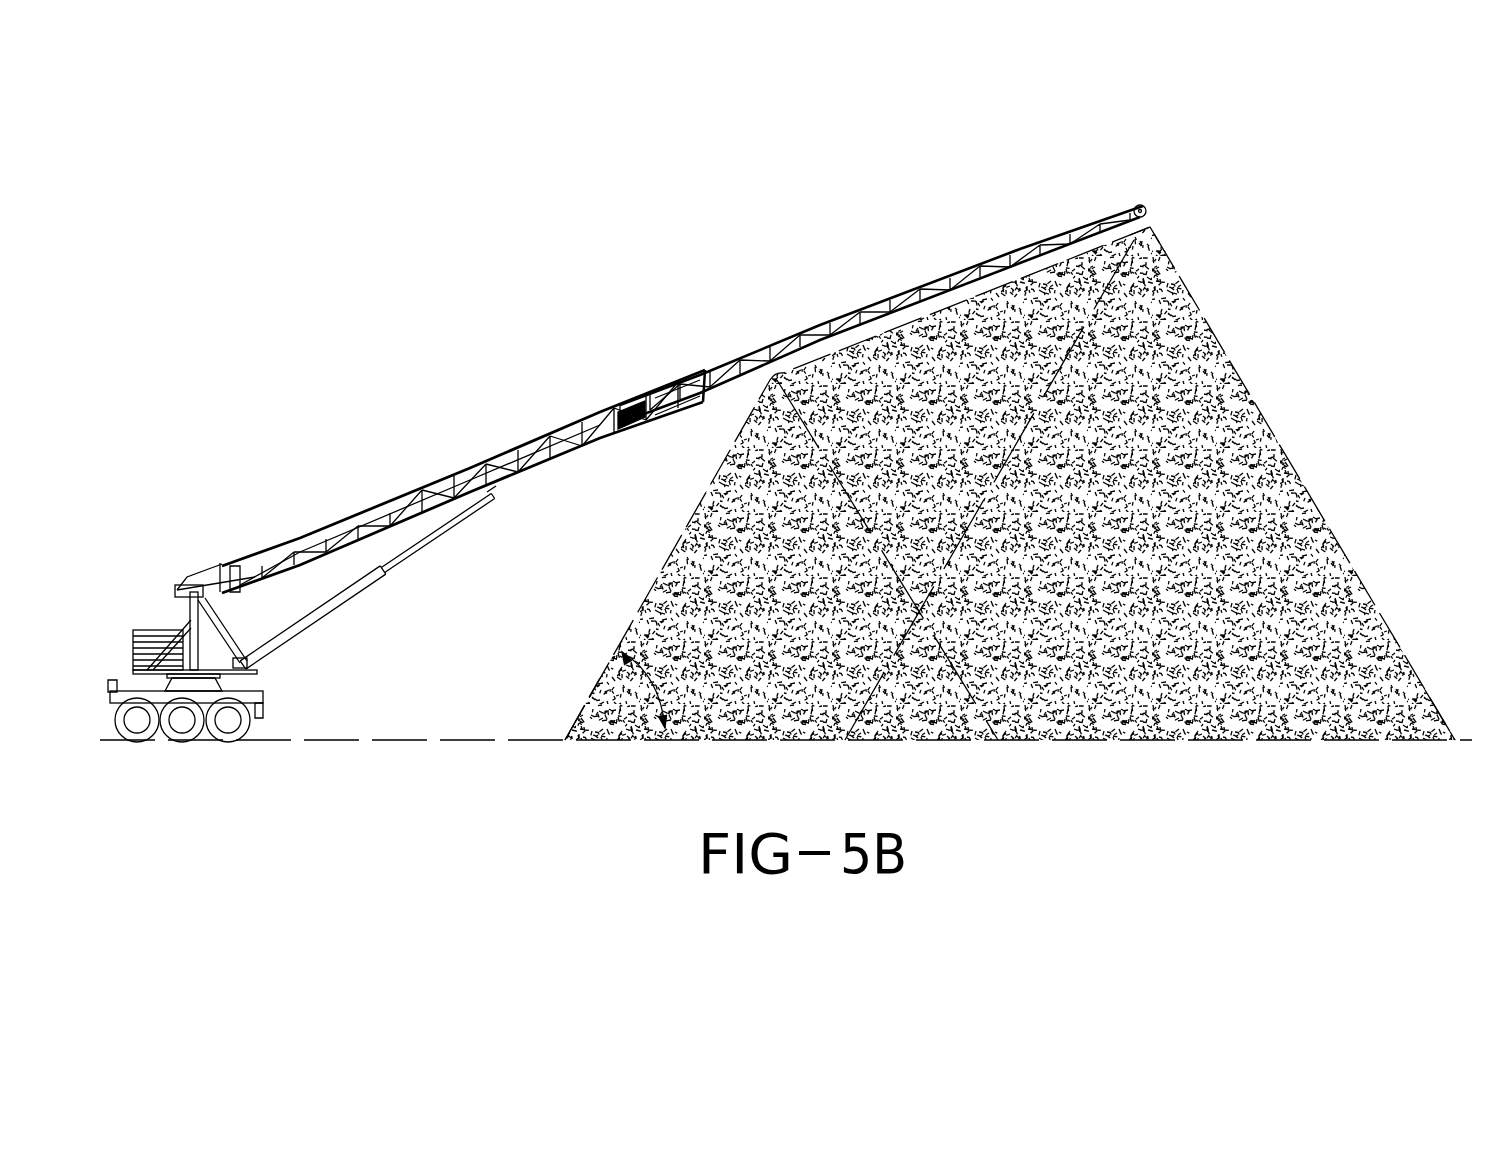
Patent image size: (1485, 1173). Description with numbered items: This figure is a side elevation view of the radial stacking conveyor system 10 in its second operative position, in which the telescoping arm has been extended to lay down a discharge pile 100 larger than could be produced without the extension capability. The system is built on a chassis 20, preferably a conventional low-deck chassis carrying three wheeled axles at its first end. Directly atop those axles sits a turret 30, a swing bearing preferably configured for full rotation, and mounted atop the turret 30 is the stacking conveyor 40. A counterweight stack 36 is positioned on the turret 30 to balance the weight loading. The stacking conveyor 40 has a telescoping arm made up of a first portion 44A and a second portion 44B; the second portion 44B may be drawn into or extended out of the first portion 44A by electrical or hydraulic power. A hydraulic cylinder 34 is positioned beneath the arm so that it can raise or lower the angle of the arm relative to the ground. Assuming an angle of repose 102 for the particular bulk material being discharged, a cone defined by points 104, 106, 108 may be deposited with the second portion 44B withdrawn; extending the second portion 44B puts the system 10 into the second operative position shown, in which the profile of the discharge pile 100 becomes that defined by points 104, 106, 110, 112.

The radial stacking conveyor system 10 is at (377, 317).
The chassis 20 is at (267, 700).
The turret 30 is at (192, 688).
The hydraulic cylinder 34 is at (340, 600).
The counterweight stack 36 is at (153, 632).
The stacking conveyor 40 is at (628, 392).
The first portion 44A is at (327, 522).
The second portion 44B is at (980, 262).
The discharge pile 100 is at (1285, 400).
The angle of repose 102 is at (650, 688).
The point 104 is at (563, 738).
The point 106 is at (790, 380).
The point 108 is at (968, 702).
The point 110 is at (1150, 225).
The point 112 is at (1452, 740).